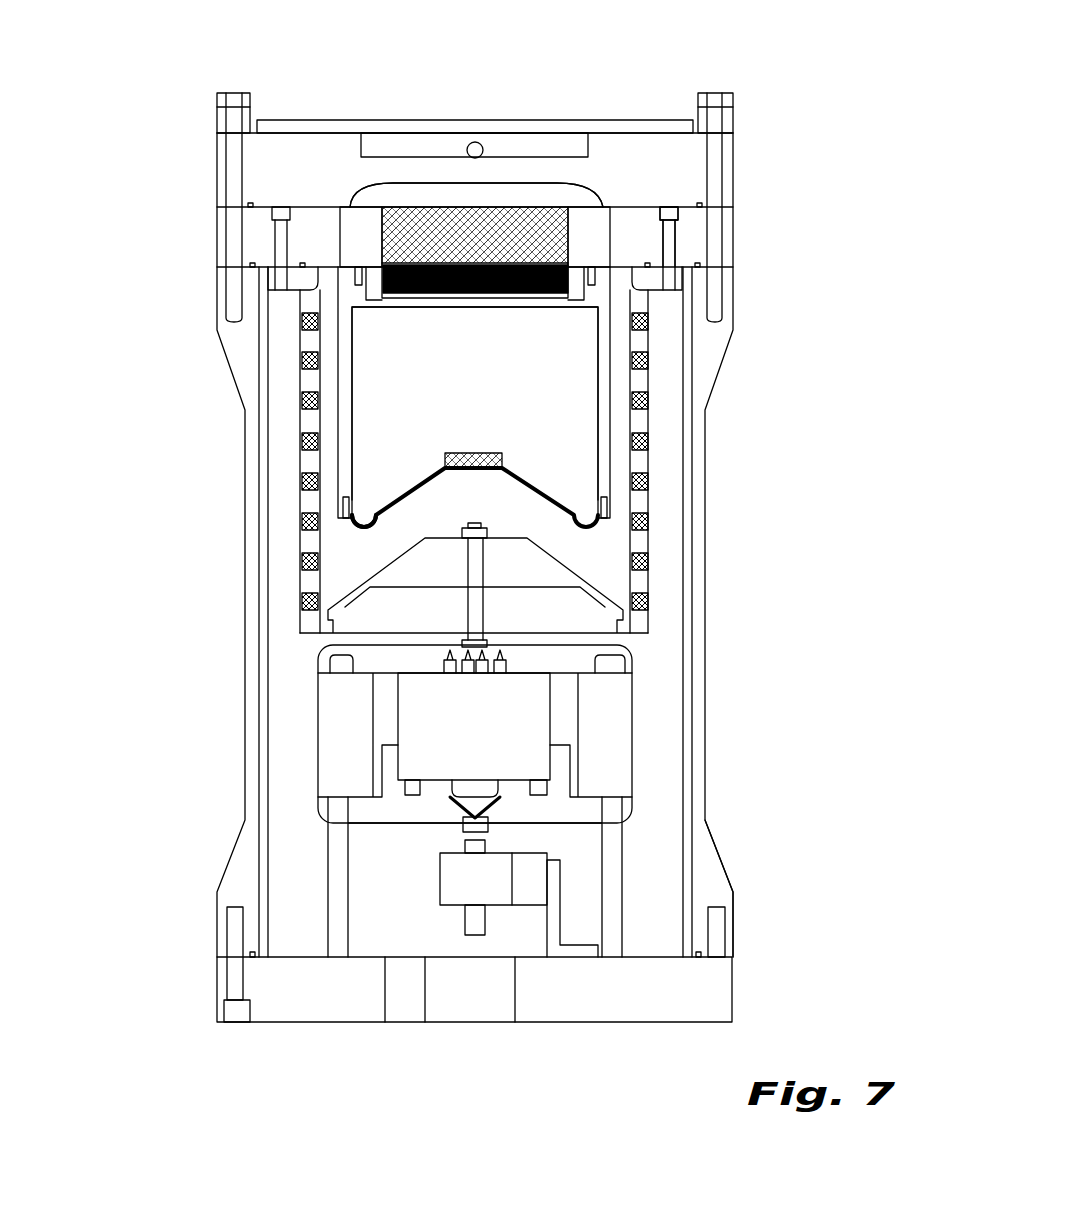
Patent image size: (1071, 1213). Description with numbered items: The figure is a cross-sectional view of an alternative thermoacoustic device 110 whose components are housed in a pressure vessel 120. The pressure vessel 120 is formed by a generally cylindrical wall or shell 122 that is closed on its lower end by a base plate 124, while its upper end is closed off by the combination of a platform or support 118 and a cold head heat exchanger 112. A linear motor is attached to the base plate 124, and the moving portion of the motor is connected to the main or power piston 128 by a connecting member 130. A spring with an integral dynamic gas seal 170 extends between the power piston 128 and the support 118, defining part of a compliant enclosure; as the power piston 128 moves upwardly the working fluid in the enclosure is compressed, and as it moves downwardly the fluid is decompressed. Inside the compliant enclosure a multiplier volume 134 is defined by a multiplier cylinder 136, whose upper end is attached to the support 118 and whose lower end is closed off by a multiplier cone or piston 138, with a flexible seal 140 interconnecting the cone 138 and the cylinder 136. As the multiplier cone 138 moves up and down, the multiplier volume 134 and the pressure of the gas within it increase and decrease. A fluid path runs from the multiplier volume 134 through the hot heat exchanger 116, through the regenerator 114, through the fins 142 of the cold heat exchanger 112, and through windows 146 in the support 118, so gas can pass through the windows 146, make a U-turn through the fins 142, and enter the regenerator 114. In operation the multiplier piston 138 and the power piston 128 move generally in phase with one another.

The thermoacoustic device 110 is at (763, 80).
The cold head heat exchanger 112 is at (212, 170).
The regenerator 114 is at (552, 240).
The hot heat exchanger 116 is at (450, 307).
The support 118 is at (647, 239).
The pressure vessel 120 is at (708, 582).
The wall or shell 122 is at (707, 862).
The base plate 124 is at (263, 985).
The power piston 128 is at (397, 563).
The connecting member 130 is at (477, 587).
The multiplier volume 134 is at (475, 403).
The multiplier cylinder 136 is at (345, 412).
The multiplier cone 138 is at (543, 492).
The flexible seal 140 is at (350, 522).
The fins 142 is at (565, 195).
The windows 146 is at (342, 225).
The spring with integral dynamic gas seal 170 is at (300, 363).